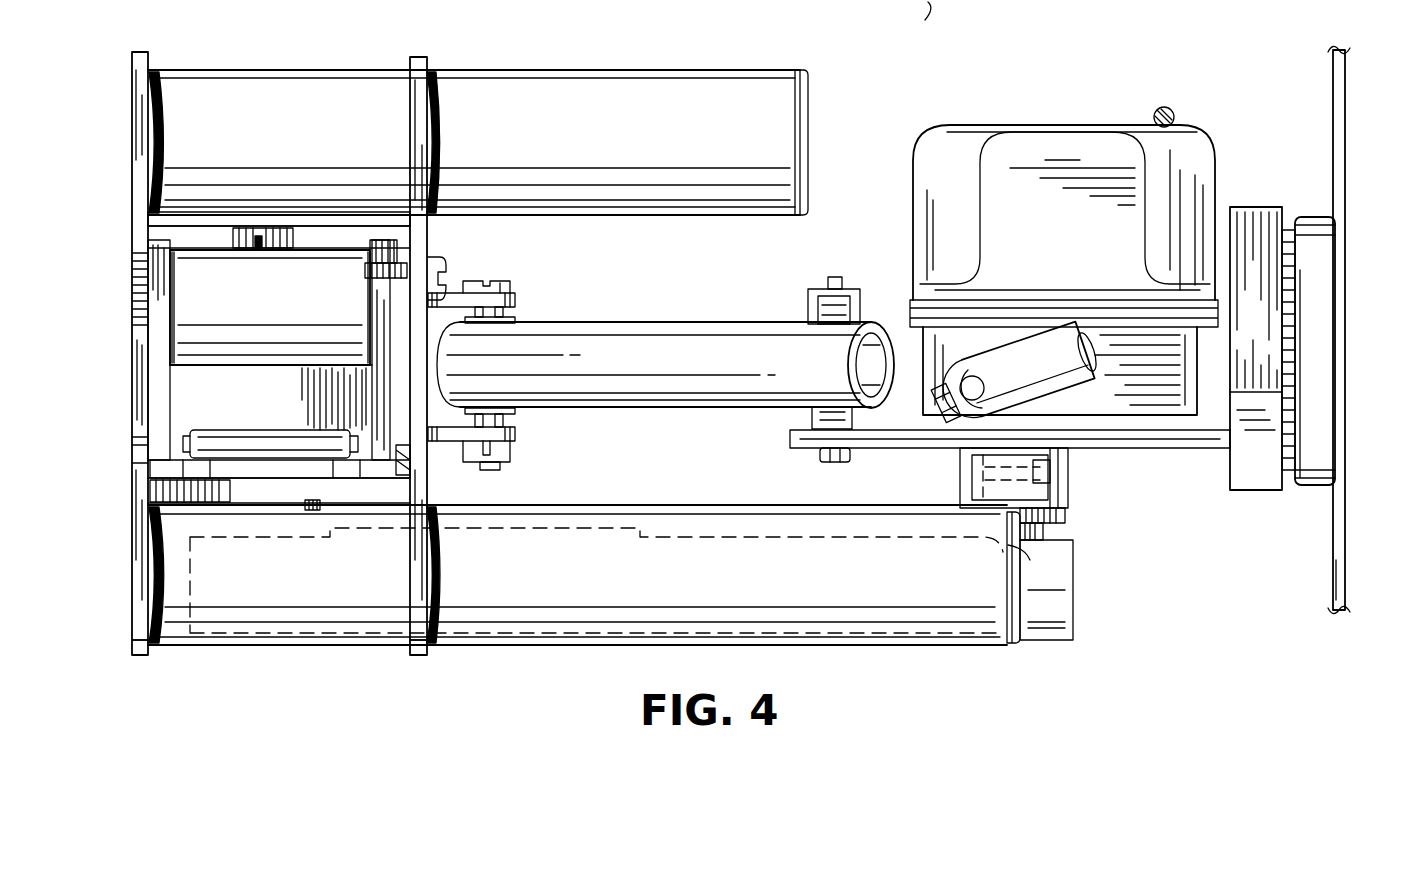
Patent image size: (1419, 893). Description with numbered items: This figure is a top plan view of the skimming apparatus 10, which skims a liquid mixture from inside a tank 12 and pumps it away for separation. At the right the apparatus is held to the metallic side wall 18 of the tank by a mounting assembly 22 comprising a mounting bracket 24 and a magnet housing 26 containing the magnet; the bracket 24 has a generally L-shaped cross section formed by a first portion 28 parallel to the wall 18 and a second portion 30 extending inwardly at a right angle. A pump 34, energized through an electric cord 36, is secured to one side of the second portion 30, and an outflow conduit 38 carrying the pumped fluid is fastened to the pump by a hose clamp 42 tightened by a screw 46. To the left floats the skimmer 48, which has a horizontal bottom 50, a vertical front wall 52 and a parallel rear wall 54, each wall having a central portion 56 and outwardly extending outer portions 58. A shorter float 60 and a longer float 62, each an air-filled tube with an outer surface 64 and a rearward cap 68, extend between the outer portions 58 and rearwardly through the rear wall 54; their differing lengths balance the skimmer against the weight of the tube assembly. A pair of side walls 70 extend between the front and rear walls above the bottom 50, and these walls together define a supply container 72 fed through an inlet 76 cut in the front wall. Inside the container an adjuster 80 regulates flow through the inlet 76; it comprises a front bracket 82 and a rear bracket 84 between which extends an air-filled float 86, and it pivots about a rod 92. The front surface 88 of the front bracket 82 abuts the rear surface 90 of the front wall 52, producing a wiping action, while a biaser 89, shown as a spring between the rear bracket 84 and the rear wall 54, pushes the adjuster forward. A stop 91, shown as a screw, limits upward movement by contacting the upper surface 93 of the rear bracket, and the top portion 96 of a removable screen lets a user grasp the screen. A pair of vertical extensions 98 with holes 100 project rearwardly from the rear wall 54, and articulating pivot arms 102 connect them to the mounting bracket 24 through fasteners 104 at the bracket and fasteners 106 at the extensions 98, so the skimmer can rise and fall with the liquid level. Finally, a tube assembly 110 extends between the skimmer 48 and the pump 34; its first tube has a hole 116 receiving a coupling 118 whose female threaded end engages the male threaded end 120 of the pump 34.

The skimming apparatus 10 is at (928, 26).
The tank 12 is at (1358, 553).
The side wall 18 is at (1345, 128).
The mounting assembly 22 is at (1067, 118).
The mounting bracket 24 is at (1155, 448).
The magnet housing 26 is at (1315, 211).
The first portion 28 is at (1258, 490).
The second portion 30 is at (1088, 450).
The pump 34 is at (1076, 250).
The electric cord 36 is at (1174, 114).
The outflow conduit 38 is at (1010, 378).
The hose clamp 42 is at (975, 365).
The screw 46 is at (942, 422).
The floating skimmer 48 is at (281, 684).
The bottom 50 is at (200, 232).
The front wall 52 is at (137, 403).
The rear wall 54 is at (427, 120).
The central portion 56 is at (130, 433).
The outer portions 58 is at (132, 121).
The float 60 is at (580, 70).
The float 62 is at (890, 647).
The outer surface 64 is at (680, 108).
The cap 68 is at (808, 120).
The side walls 70 is at (175, 212).
The supply container 72 is at (330, 212).
The inlet 76 is at (132, 309).
The adjuster 80 is at (258, 236).
The front bracket 82 is at (172, 388).
The rear bracket 84 is at (370, 315).
The float 86 is at (250, 316).
The front surface 88 is at (132, 370).
The biaser 89 is at (410, 483).
The rear surface 90 is at (160, 300).
The stop 91 is at (430, 262).
The rod 92 is at (183, 440).
The upper surface 93 is at (370, 291).
The top portion 96 is at (290, 430).
The extensions 98 is at (465, 285).
The holes 100 is at (516, 300).
The pivot arms 102 is at (630, 330).
The fasteners 104 is at (834, 277).
The fasteners 106 is at (492, 470).
The tube assembly 110 is at (1092, 633).
The hole 116 is at (1007, 575).
The coupling 118 is at (1062, 522).
The male threaded end 120 is at (1070, 488).